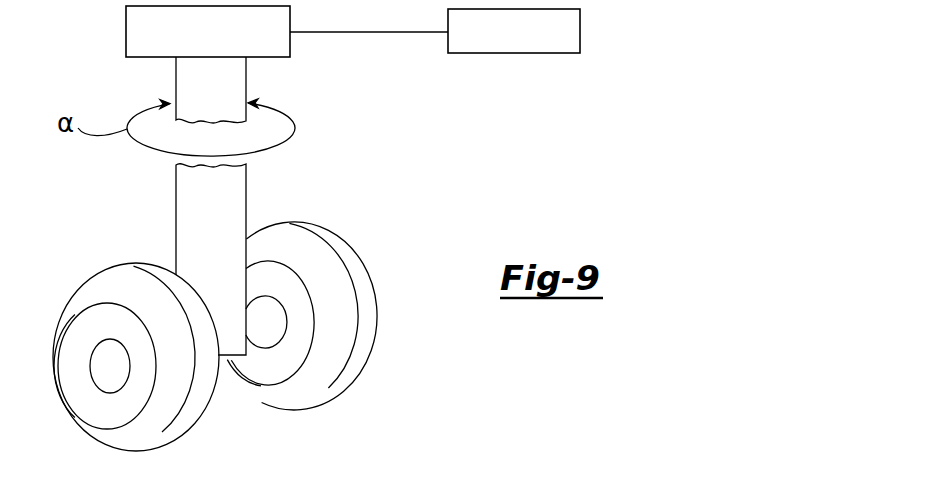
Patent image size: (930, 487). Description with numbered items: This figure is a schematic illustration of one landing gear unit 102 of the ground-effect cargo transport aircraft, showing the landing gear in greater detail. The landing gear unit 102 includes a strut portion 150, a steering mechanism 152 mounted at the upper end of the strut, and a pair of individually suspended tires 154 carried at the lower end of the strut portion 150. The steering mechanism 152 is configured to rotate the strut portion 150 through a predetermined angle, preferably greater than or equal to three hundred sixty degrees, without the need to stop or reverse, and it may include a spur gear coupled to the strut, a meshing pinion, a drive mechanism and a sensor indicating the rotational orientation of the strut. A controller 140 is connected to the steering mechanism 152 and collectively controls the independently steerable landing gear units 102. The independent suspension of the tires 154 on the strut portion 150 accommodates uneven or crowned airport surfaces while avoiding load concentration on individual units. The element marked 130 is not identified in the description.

The landing gear unit 102 is at (120, 212).
The platform base 130 is at (522, 480).
The controller 140 is at (480, 53).
The strut portion 150 is at (246, 208).
The steering mechanism 152 is at (270, 57).
The tires 154 is at (182, 437).